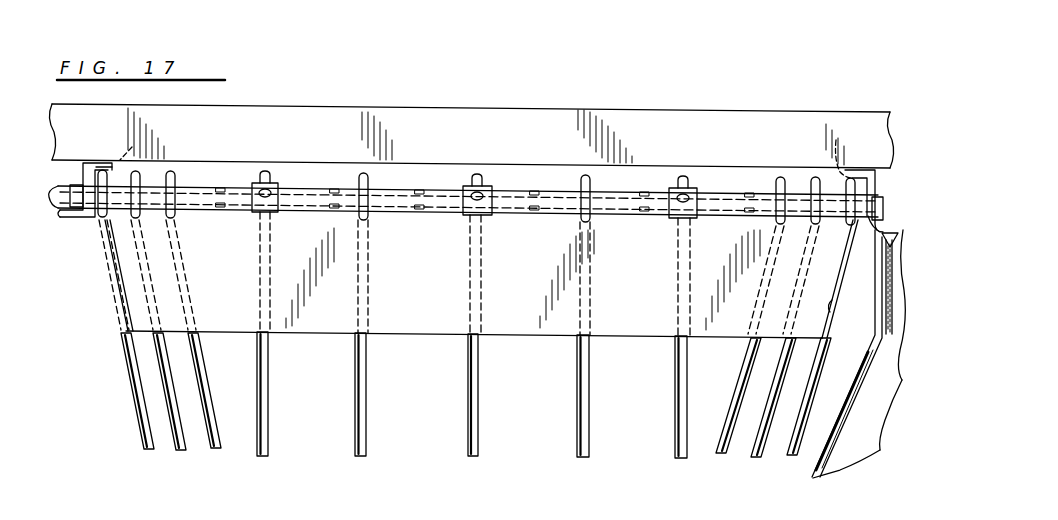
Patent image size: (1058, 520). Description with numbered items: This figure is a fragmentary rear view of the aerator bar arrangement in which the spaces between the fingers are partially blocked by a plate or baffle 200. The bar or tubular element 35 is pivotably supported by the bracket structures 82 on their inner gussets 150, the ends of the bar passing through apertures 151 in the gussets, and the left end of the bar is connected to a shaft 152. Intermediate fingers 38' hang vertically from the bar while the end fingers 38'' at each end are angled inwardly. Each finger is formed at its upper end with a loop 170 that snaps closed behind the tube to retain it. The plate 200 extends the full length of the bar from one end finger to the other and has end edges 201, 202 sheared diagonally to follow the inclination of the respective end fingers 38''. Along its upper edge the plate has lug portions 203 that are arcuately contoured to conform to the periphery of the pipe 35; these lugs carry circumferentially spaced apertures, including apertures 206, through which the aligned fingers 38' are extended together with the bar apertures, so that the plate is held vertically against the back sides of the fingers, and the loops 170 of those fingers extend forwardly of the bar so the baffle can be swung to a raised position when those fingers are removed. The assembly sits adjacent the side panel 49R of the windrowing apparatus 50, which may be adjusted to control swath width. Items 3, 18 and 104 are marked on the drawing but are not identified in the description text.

The upper support beam 3 is at (557, 108).
The shaft 152 is at (72, 162).
The apertures 151 is at (138, 145).
The loop 170 is at (172, 173).
The apertures 206 is at (272, 190).
The upper edge lug portions 203 is at (280, 200).
The section line 18- 18 is at (702, 134).
The inner gussets 150 is at (98, 212).
The bar or tubular element 35 is at (907, 198).
The bracket structures 82 is at (66, 217).
The end edge 202 is at (118, 273).
The plate or baffle 200 is at (141, 295).
The intermediate fingers 38' is at (472, 395).
The end fingers 38'' is at (476, 412).
The end edge 201 is at (830, 310).
The windrowing apparatus 50 is at (884, 338).
The side wall 104 is at (838, 378).
The side panel 49R is at (838, 462).